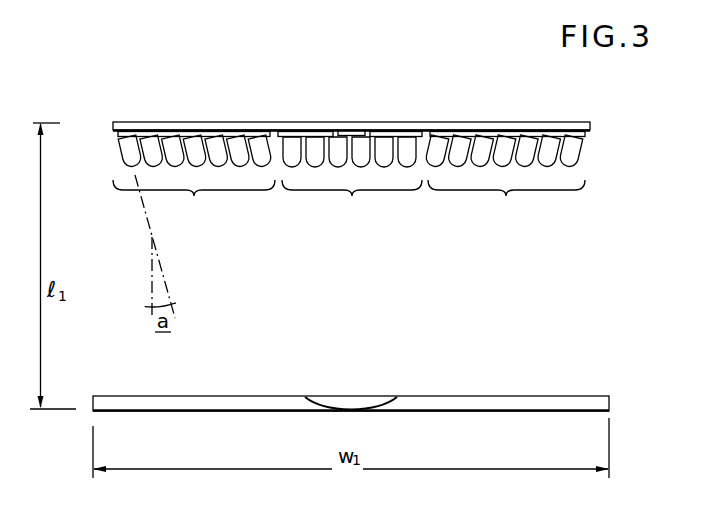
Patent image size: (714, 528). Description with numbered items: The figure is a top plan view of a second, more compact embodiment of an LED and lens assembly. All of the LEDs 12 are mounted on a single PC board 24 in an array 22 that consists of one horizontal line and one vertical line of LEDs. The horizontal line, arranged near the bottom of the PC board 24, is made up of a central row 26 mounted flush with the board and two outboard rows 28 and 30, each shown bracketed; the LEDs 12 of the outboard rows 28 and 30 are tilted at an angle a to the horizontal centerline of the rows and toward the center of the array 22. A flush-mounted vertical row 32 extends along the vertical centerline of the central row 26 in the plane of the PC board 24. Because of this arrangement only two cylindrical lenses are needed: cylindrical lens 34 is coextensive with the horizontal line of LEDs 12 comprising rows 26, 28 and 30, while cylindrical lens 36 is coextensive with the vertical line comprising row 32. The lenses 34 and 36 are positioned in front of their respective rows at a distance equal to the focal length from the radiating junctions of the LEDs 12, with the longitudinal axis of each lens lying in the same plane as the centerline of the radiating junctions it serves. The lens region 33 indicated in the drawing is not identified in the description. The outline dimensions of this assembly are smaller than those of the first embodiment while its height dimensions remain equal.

The LED 12 is at (582, 158).
The array 22 is at (338, 238).
The PC board 24 is at (548, 123).
The central row 26 is at (350, 151).
The outboard row 28 is at (194, 179).
The outboard row 30 is at (527, 179).
The vertical row 32 is at (356, 143).
The detector assembly 33 is at (452, 368).
The cylindrical lens 34 is at (578, 403).
The cylindrical lens 36 is at (365, 402).